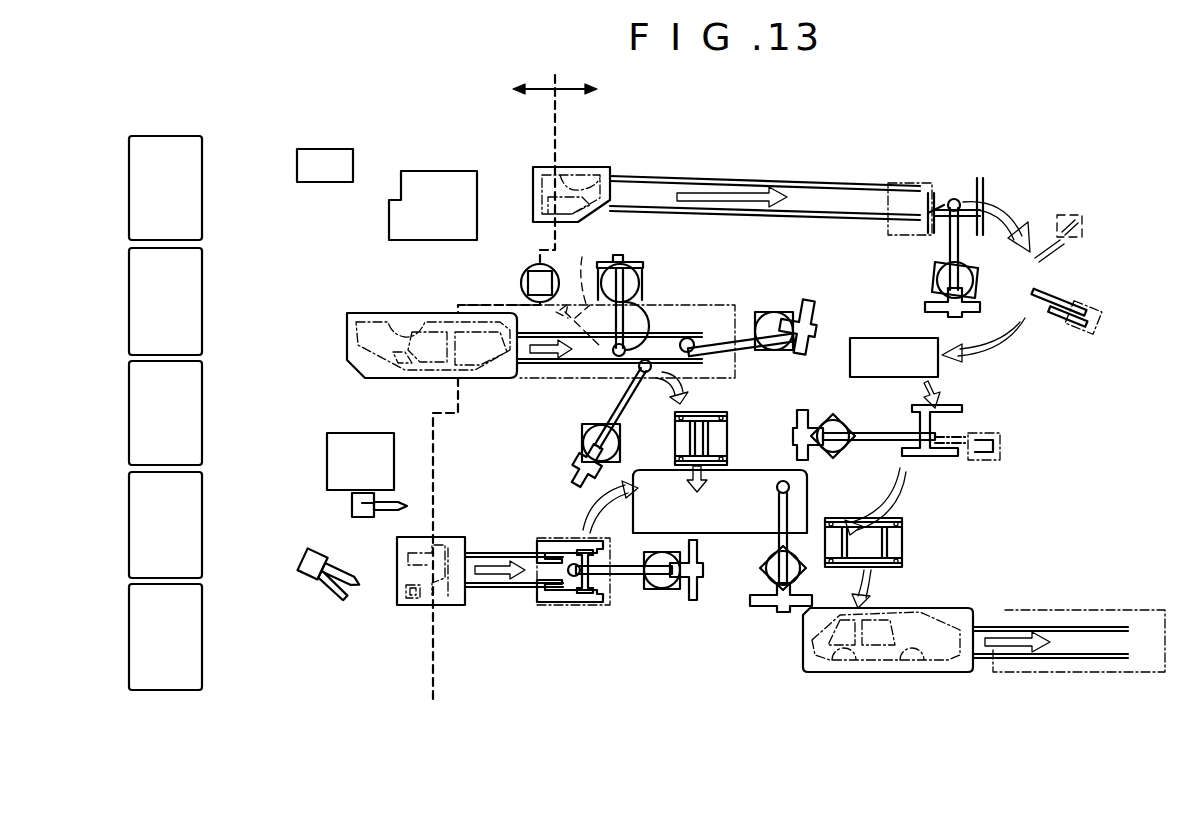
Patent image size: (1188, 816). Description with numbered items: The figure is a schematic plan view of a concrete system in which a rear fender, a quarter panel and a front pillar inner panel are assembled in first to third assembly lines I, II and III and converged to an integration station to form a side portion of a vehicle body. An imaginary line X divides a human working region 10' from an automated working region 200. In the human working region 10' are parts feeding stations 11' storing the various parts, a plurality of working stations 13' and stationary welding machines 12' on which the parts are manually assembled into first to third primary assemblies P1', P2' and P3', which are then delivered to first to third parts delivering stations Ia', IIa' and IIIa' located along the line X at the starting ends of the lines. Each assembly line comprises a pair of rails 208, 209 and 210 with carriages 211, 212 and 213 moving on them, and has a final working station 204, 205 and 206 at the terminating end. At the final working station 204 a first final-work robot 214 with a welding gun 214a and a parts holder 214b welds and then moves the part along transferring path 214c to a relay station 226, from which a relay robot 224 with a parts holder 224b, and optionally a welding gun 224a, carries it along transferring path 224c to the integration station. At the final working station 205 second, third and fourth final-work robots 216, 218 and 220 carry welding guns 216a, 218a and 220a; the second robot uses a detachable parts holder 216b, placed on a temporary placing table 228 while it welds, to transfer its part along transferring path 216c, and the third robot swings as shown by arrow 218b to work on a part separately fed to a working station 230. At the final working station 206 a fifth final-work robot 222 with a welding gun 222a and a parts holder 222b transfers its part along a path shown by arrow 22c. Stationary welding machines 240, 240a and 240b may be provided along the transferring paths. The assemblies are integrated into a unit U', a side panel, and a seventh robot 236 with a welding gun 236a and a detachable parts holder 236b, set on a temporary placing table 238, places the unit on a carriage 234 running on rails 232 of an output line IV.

The human working region 10' is at (533, 91).
The parts feeding stations 11' is at (196, 413).
The stationary welding machines 12' is at (332, 548).
The working stations 13' is at (377, 319).
The automated working region 200 is at (657, 110).
The final working station 204 is at (942, 173).
The final working station 205 is at (712, 302).
The final working station 206 is at (592, 618).
The rails 208 is at (632, 202).
The rails 209 is at (588, 355).
The rails 210 is at (485, 555).
The carriage 211 is at (578, 168).
The carriage 212 is at (404, 313).
The carriage 213 is at (456, 606).
The first final-work robot 214 is at (978, 290).
The welding gun 214a is at (956, 200).
The parts holder 214b is at (985, 195).
The transferring path 214c is at (1026, 230).
The second final-work robot 216 is at (582, 435).
The welding gun 216a is at (640, 372).
The parts holder 216b is at (727, 440).
The transferring path 216c is at (655, 382).
The third final-work robot 218 is at (640, 268).
The welding gun 218a is at (648, 308).
The swing arrow 218b is at (592, 287).
The fourth final-work robot 220 is at (808, 300).
The welding gun 220a is at (755, 350).
The fifth final-work robot 222 is at (660, 590).
The welding gun 222a is at (577, 578).
The parts holder 222b is at (556, 540).
The relay robot 224 is at (842, 418).
The welding gun 224a is at (948, 437).
The parts holder 224b is at (912, 446).
The transferring path 224c is at (940, 392).
The relay station 226 is at (878, 338).
The temporary placing table 228 is at (718, 412).
The working station 230 is at (521, 285).
The rails 232 is at (1082, 642).
The carriage 234 is at (952, 672).
The seventh robot 236 is at (770, 592).
The welding gun 236a is at (760, 497).
The parts holder 236b is at (904, 548).
The temporary placing table 238 is at (904, 528).
The stationary welding machine 240 is at (1002, 447).
The stationary welding machine 240a is at (1098, 304).
The stationary welding machine 240b is at (1084, 228).
The transfer path 22c is at (601, 505).
The first assembly line I is at (713, 165).
The second assembly line II is at (525, 372).
The third assembly line III is at (510, 600).
The output line IV is at (993, 612).
The first parts delivering station Ia' is at (513, 157).
The second parts delivering station IIa' is at (314, 303).
The third parts delivering station IIIa' is at (372, 631).
The first primary assembly P1' is at (512, 211).
The second primary assembly P2' is at (317, 350).
The third primary assembly P3' is at (409, 633).
The unit U' is at (819, 690).
The imaginary line X— X is at (493, 391).